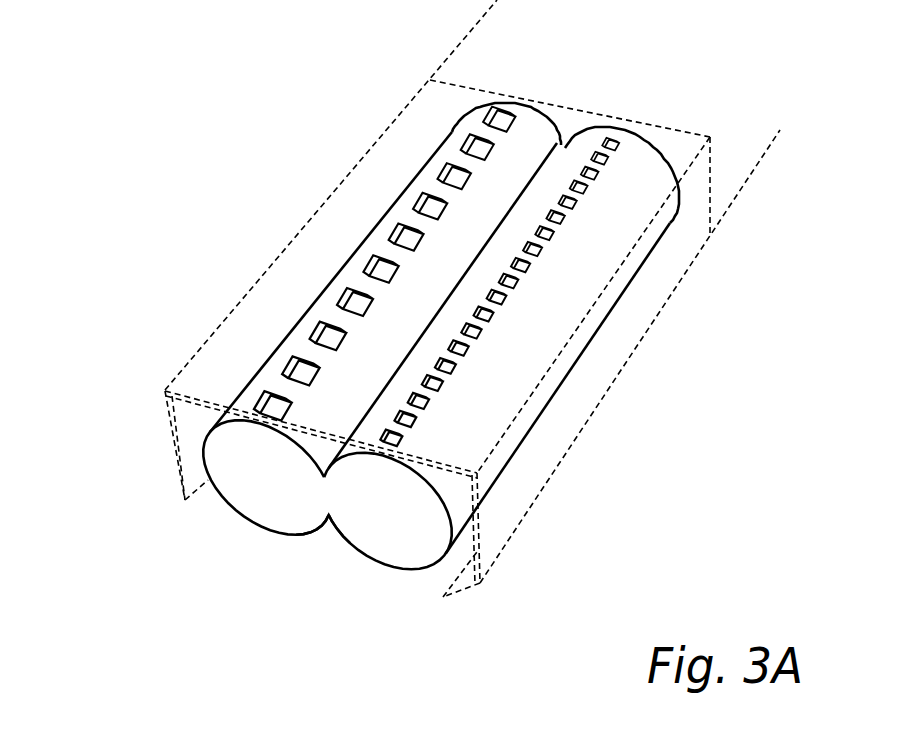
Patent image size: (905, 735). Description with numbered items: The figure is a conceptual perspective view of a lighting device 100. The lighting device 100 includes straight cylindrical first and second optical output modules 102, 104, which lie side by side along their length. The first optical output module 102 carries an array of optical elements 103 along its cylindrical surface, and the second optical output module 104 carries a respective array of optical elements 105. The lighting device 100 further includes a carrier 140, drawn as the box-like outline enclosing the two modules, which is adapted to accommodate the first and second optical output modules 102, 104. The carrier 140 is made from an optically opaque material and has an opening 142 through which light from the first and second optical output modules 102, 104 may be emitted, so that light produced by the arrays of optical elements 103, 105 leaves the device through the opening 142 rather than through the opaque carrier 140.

The lighting device 100 is at (222, 192).
The first optical output module 102 is at (198, 518).
The array of optical elements 103 is at (290, 370).
The second optical output module 104 is at (460, 582).
The array of optical elements 105 is at (427, 404).
The carrier 140 is at (628, 348).
The opening 142 is at (282, 588).